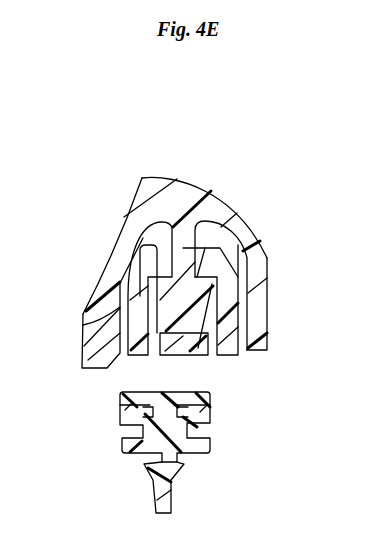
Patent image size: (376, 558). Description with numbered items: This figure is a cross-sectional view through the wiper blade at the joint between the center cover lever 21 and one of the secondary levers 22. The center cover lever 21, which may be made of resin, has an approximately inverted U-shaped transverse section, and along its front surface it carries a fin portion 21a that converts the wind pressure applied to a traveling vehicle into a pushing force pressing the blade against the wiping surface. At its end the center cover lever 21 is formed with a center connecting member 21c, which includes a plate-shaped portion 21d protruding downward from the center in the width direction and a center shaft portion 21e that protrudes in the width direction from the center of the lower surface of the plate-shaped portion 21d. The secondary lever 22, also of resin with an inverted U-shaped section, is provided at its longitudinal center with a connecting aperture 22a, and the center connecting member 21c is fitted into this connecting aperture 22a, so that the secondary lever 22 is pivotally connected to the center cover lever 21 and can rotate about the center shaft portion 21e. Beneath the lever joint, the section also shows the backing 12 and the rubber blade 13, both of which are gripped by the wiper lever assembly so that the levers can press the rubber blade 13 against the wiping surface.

The center cover lever 21 is at (186, 177).
The fin portion 21a is at (127, 216).
The center connecting member 21c is at (122, 295).
The plate-shaped portion 21d is at (183, 249).
The center shaft portion 21e is at (203, 296).
The secondary lever 22 is at (83, 319).
The connecting aperture 22a is at (205, 318).
The backing 12 is at (211, 413).
The rubber blade 13 is at (170, 492).